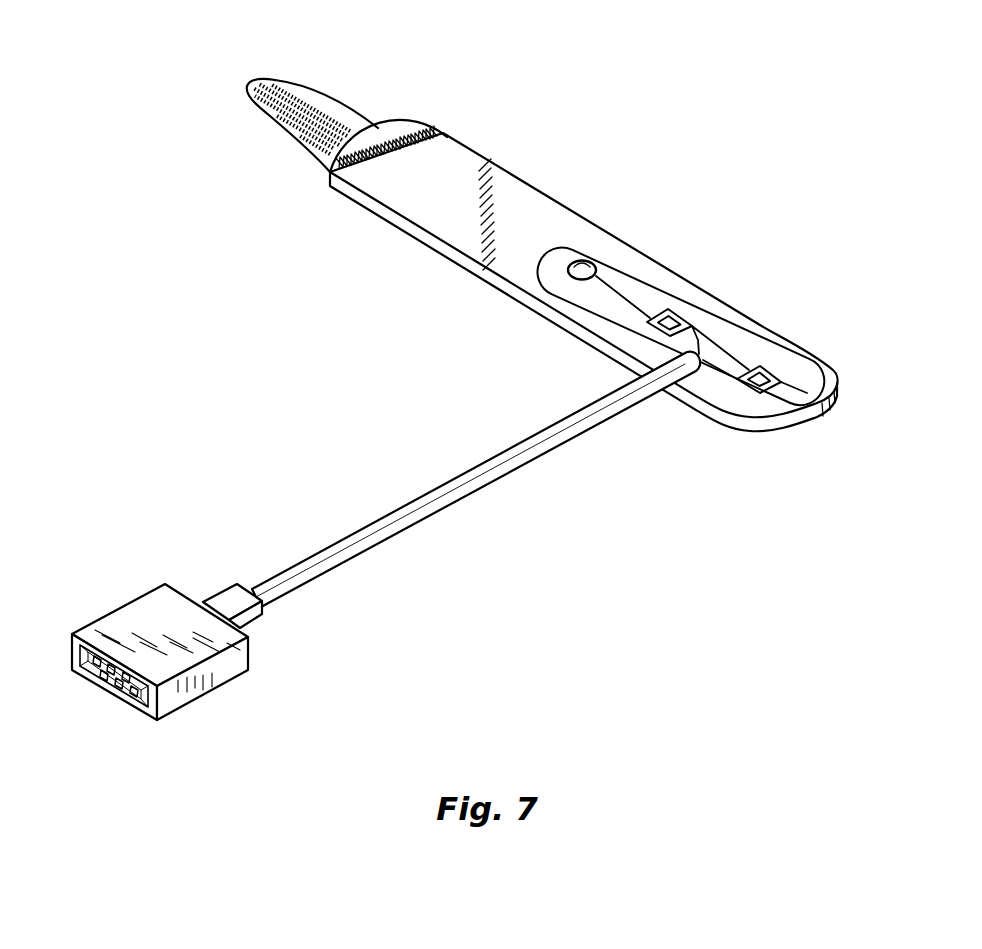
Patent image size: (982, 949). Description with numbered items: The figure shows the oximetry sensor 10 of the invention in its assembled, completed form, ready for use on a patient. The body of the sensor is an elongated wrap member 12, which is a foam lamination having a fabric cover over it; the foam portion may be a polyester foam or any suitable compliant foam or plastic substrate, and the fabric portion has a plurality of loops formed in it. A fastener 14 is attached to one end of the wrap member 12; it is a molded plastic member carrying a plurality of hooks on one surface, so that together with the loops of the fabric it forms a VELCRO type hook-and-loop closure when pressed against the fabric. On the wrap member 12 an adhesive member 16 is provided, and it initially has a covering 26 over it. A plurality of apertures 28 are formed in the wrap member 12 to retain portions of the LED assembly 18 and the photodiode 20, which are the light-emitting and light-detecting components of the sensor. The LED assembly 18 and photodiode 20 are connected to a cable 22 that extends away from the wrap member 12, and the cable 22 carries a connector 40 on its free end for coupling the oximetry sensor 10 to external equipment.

The oximetry sensor 10 is at (484, 374).
The wrap member 12 is at (505, 190).
The fastener 14 is at (327, 93).
The adhesive member 16 is at (667, 300).
The LED assembly 18 is at (800, 381).
The photodiode 20 is at (689, 316).
The cable 22 is at (523, 452).
The covering 26 is at (547, 270).
The apertures 28 is at (590, 263).
The connector 40 is at (227, 668).